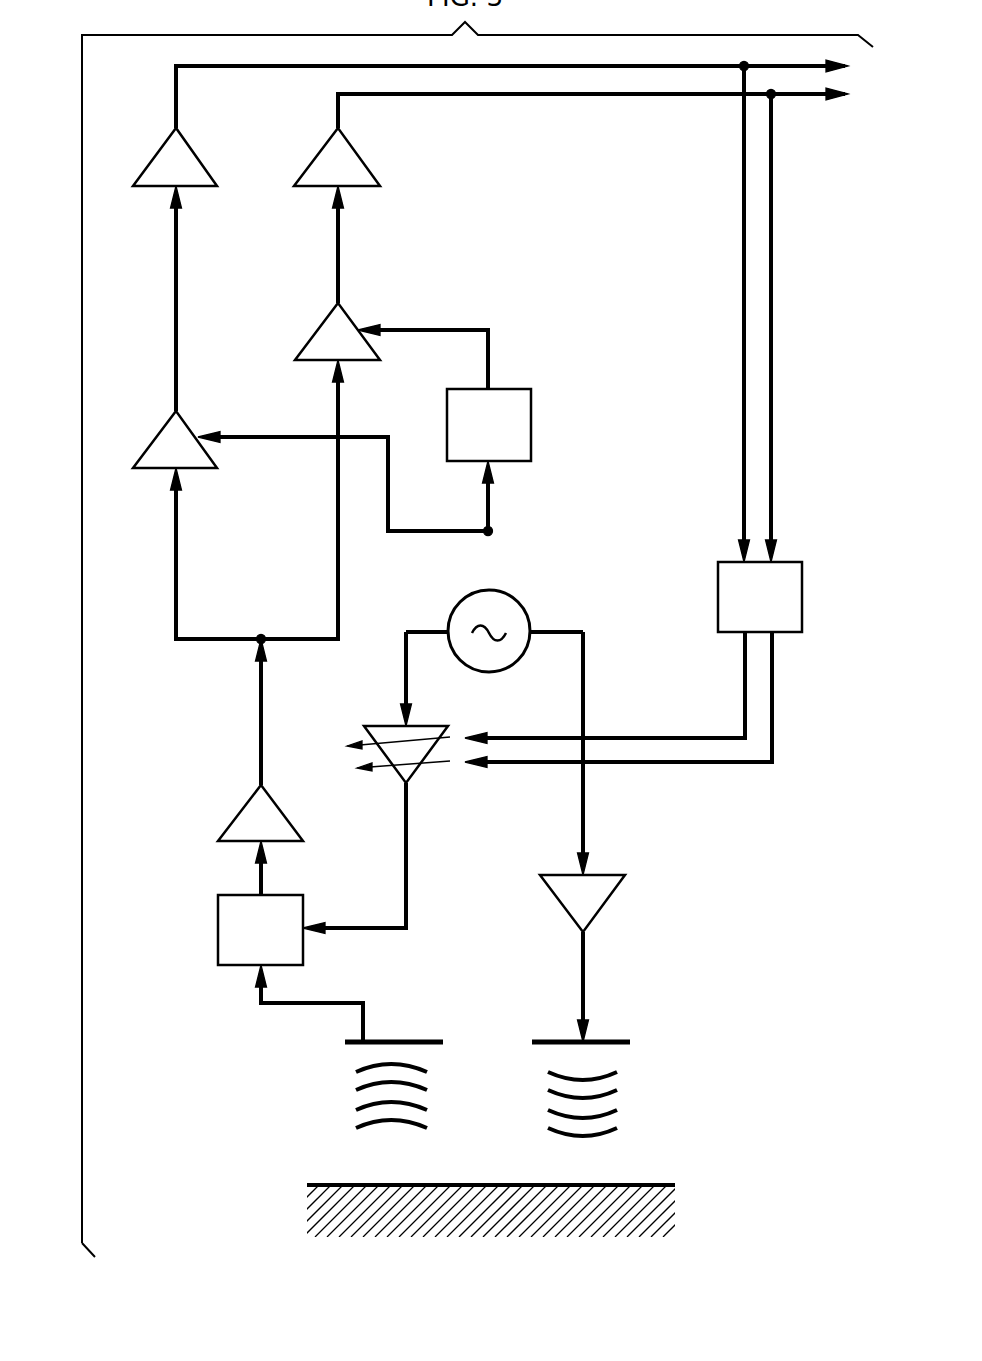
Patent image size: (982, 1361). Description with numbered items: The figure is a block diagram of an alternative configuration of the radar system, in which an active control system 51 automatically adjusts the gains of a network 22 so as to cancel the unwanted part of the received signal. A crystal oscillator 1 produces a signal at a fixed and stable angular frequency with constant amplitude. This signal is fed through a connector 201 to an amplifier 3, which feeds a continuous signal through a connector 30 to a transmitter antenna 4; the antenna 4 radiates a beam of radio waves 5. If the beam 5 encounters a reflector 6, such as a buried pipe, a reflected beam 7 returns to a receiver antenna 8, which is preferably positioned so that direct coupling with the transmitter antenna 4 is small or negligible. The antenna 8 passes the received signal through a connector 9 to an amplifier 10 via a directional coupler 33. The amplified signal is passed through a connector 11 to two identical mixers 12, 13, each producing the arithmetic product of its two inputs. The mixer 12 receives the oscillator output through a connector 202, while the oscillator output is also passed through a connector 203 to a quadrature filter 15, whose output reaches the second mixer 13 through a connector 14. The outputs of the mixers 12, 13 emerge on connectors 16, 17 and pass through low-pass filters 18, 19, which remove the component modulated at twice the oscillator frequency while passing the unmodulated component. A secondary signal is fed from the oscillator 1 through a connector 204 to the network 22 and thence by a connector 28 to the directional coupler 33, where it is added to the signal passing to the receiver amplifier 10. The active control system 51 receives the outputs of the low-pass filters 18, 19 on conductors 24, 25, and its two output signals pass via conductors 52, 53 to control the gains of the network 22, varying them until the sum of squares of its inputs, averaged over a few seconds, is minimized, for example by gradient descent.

The crystal oscillator 1 is at (458, 603).
The amplifier 3 is at (560, 905).
The transmitter antenna 4 is at (532, 1042).
The beam of radio waves 5 is at (538, 1100).
The reflector 6 is at (640, 1185).
The reflected beam 7 is at (348, 1100).
The receiver antenna 8 is at (345, 1042).
The connector 9 is at (363, 1017).
The amplifier 10 is at (240, 812).
The connector 11 is at (176, 555).
The mixer 12 is at (156, 436).
The second mixer 13 is at (316, 329).
The connector 14 is at (488, 355).
The quadrature filter 15 is at (447, 410).
The connector 16 is at (176, 305).
The connector 17 is at (338, 251).
The low-pass filter 18 is at (154, 158).
The low-pass filter 19 is at (316, 158).
The network 22 is at (368, 733).
The conductor 24 is at (176, 94).
The conductor 25 is at (338, 106).
The connector 28 is at (406, 860).
The connector 30 is at (583, 982).
The directional coupler 33 is at (218, 924).
The active control system 51 is at (718, 590).
The conductor 52 is at (745, 665).
The conductor 53 is at (772, 667).
The connector 201 is at (583, 696).
The connector 202 is at (388, 499).
The connector 203 is at (488, 499).
The connector 204 is at (406, 668).